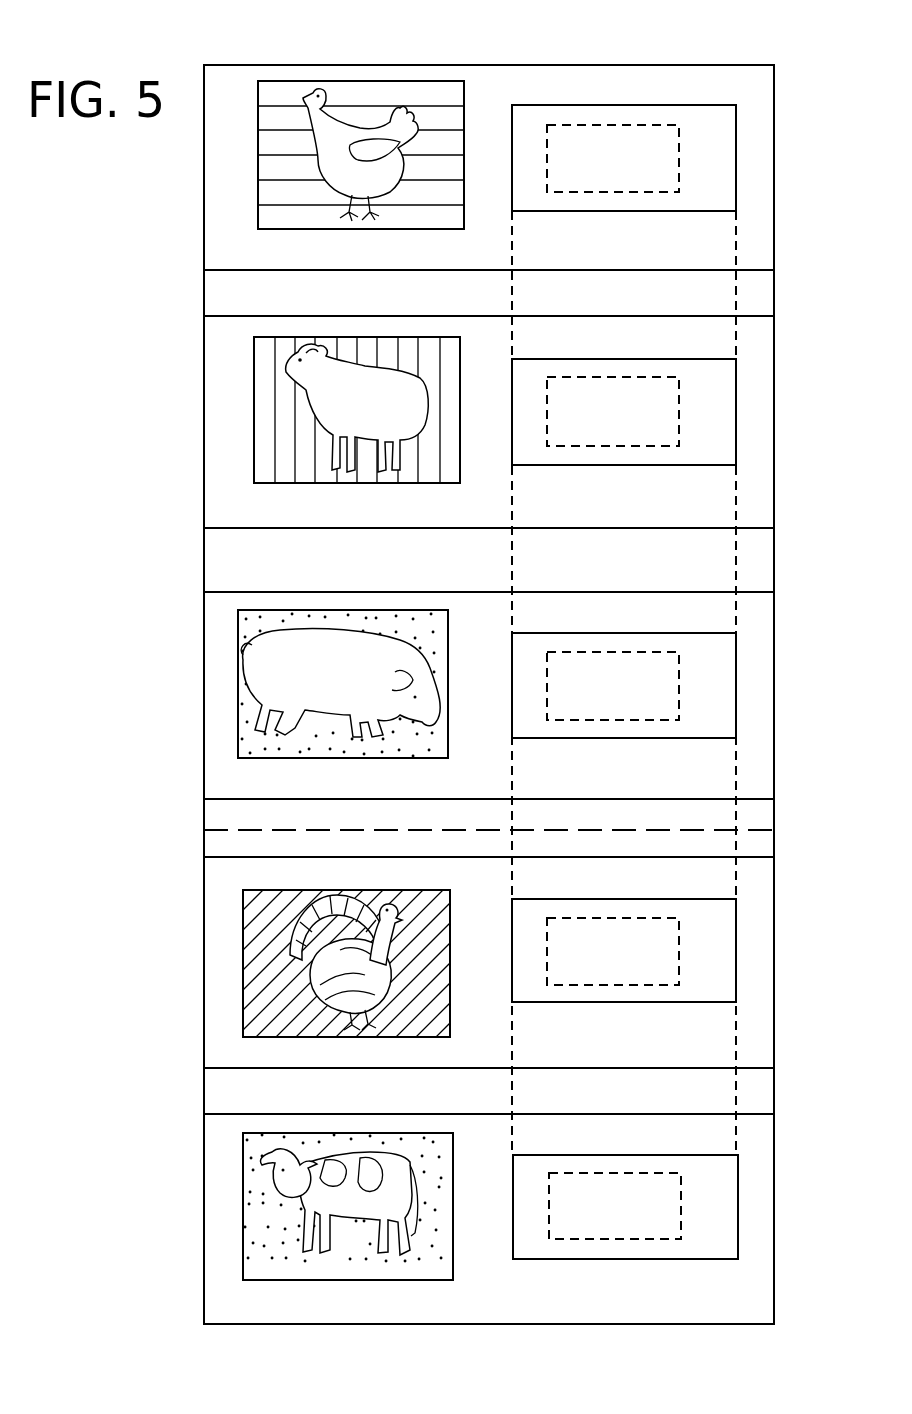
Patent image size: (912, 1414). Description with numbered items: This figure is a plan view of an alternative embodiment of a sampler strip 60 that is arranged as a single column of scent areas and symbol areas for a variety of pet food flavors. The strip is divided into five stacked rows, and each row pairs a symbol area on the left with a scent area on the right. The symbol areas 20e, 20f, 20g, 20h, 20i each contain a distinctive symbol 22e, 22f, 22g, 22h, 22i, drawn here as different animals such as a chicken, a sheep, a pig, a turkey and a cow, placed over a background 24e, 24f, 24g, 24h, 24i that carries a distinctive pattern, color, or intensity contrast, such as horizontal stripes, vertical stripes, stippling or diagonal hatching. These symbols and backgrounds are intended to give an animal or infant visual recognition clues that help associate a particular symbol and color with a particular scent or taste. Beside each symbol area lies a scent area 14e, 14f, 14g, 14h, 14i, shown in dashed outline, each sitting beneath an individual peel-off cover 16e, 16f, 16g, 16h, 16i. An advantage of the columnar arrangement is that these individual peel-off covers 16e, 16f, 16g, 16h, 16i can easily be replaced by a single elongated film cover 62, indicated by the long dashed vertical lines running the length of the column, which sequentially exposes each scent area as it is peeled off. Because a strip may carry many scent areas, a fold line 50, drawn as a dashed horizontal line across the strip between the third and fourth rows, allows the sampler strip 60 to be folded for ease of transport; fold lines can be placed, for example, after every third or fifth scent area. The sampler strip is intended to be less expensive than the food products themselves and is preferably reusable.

The sampler strip 60 is at (645, 57).
The elongated film cover 62 is at (512, 503).
The fold line 50 is at (303, 828).
The symbol area 20e is at (282, 81).
The symbol 22e is at (356, 125).
The background 24e is at (437, 103).
The peel-off cover 16e is at (660, 105).
The scent area 14e is at (668, 152).
The symbol area 20f is at (338, 352).
The symbol 22f is at (413, 377).
The background 24f is at (455, 352).
The peel-off cover 16f is at (602, 359).
The scent area 14f is at (668, 418).
The symbol area 20g is at (383, 610).
The symbol 22g is at (300, 623).
The background 24g is at (437, 635).
The peel-off cover 16g is at (600, 633).
The scent area 14g is at (668, 690).
The symbol area 20h is at (318, 890).
The symbol 22h is at (373, 900).
The background 24h is at (445, 903).
The peel-off cover 16h is at (600, 899).
The scent area 14h is at (668, 950).
The symbol area 20i is at (310, 1133).
The symbol 22i is at (378, 1157).
The background 24i is at (440, 1162).
The peel-off cover 16i is at (602, 1155).
The scent area 14i is at (668, 1208).